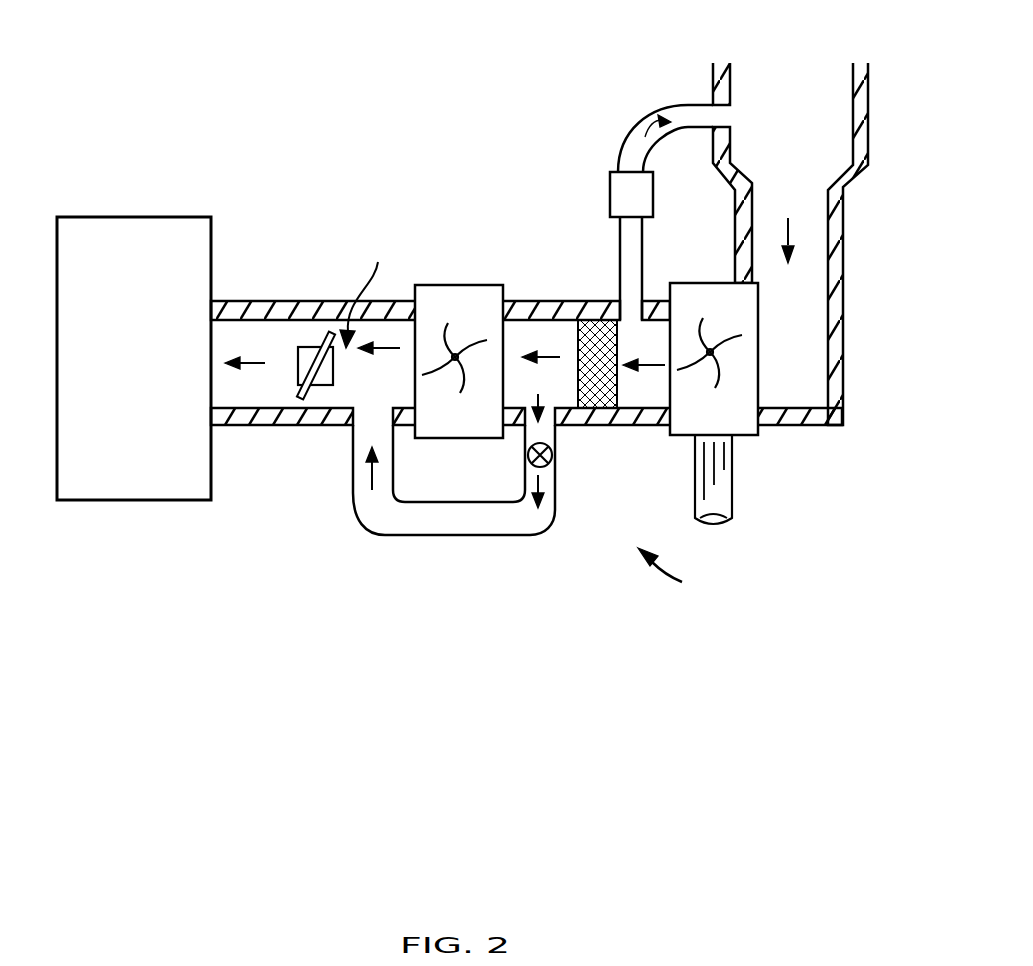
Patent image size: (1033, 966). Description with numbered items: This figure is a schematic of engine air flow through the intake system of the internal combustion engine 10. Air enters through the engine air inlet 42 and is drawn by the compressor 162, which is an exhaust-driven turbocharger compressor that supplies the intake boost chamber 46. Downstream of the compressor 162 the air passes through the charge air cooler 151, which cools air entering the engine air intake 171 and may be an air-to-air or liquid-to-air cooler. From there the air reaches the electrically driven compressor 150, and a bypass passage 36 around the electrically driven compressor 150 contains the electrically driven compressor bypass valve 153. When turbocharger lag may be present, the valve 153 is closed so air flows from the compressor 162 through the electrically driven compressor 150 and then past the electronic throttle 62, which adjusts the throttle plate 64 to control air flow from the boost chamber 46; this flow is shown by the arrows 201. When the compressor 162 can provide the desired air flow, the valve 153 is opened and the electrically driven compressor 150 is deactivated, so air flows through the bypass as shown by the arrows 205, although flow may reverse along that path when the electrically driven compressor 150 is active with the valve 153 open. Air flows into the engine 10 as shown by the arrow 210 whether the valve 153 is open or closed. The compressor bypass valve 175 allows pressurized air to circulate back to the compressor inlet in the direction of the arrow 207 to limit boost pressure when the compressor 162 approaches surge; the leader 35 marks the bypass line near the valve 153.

The internal combustion engine 10 is at (101, 217).
The bypass line 35 is at (550, 437).
The piston 36 is at (393, 536).
The engine air inlet 42 is at (770, 75).
The intake boost chamber 46 is at (365, 292).
The electronic throttle 62 is at (308, 345).
The throttle plate 64 is at (322, 337).
The electrically driven compressor 150 is at (482, 283).
The charge air cooler 151 is at (577, 343).
The electrically driven compressor bypass valve 153 is at (528, 465).
The compressor 162 is at (727, 283).
The engine air intake 171 is at (680, 571).
The compressor bypass valve 175 is at (604, 170).
The arrows 201 is at (382, 352).
The arrows 205 is at (353, 456).
The arrow 207 is at (648, 133).
The arrow 210 is at (258, 365).